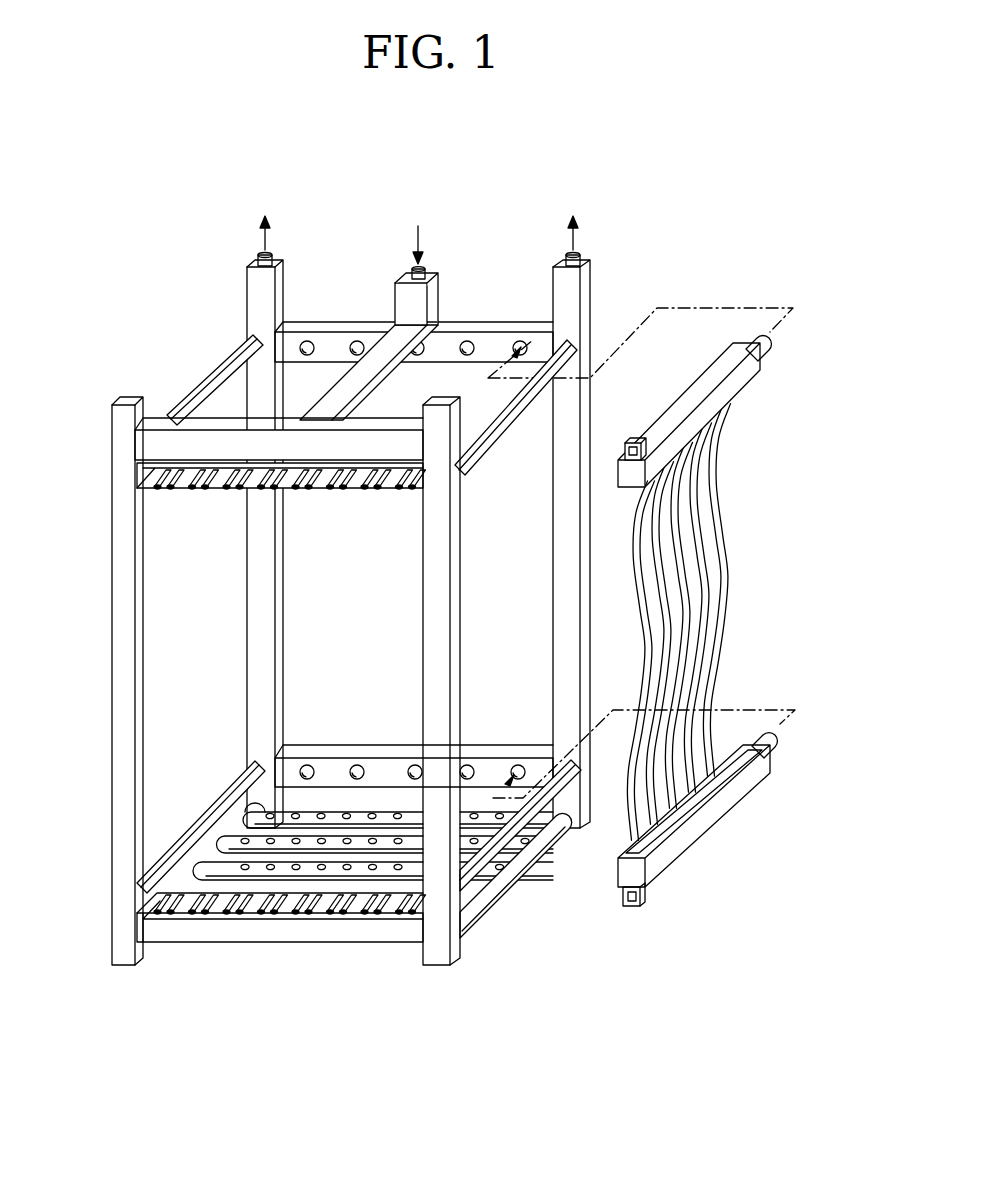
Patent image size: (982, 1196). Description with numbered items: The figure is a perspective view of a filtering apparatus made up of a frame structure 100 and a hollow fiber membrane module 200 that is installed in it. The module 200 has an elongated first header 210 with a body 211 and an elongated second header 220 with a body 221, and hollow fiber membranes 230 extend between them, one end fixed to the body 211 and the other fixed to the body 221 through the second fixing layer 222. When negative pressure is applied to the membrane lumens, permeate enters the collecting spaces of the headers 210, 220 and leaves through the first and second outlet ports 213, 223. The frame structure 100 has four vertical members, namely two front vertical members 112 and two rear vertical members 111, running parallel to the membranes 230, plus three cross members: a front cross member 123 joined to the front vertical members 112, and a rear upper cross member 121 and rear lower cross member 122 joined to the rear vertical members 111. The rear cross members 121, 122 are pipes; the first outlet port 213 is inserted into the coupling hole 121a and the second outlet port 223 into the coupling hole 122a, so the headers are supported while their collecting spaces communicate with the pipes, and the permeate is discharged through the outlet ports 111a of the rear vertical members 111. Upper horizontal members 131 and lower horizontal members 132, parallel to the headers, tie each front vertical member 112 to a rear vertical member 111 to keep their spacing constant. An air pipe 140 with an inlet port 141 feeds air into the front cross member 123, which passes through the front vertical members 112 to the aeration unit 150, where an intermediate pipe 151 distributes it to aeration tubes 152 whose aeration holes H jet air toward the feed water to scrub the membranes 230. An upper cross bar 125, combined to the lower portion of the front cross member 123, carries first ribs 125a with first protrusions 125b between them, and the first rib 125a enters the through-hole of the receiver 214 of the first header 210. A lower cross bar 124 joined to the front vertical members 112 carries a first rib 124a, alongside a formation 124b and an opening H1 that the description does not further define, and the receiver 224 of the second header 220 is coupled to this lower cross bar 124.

The frame structure 100 is at (82, 240).
The rear vertical member 111 is at (257, 292).
The outlet port 111a is at (275, 258).
The front vertical member 112 is at (120, 575).
The rear upper cross member 121 is at (340, 328).
The coupling hole 121a is at (523, 341).
The rear lower cross member 122 is at (337, 748).
The coupling hole 122a is at (523, 767).
The front cross member 123 is at (215, 427).
The lower cross bar 124 is at (173, 948).
The first rib 124a is at (261, 918).
The lower fin plate 124b is at (318, 905).
The upper cross bar 125 is at (187, 500).
The first rib 125a is at (325, 492).
The first protrusion 125b is at (372, 492).
The upper horizontal member 131 is at (222, 366).
The lower horizontal member 132 is at (227, 804).
The air pipe 140 is at (434, 293).
The inlet port 141 is at (430, 272).
The aeration unit 150 is at (287, 862).
The intermediate pipe 151 is at (187, 878).
The aeration tube 152 is at (203, 838).
The aeration hole H is at (378, 870).
The fin opening H1 is at (228, 913).
The hollow fiber membrane module 200 is at (726, 628).
The first header 210 is at (721, 411).
The body 211 is at (738, 378).
The first outlet port 213 is at (768, 344).
The receiver 214 is at (626, 443).
The second header 220 is at (732, 827).
The body 221 is at (740, 778).
The second fixing layer 222 is at (692, 800).
The second outlet port 223 is at (772, 742).
The receiver 224 is at (645, 896).
The hollow fiber membrane 230 is at (740, 570).